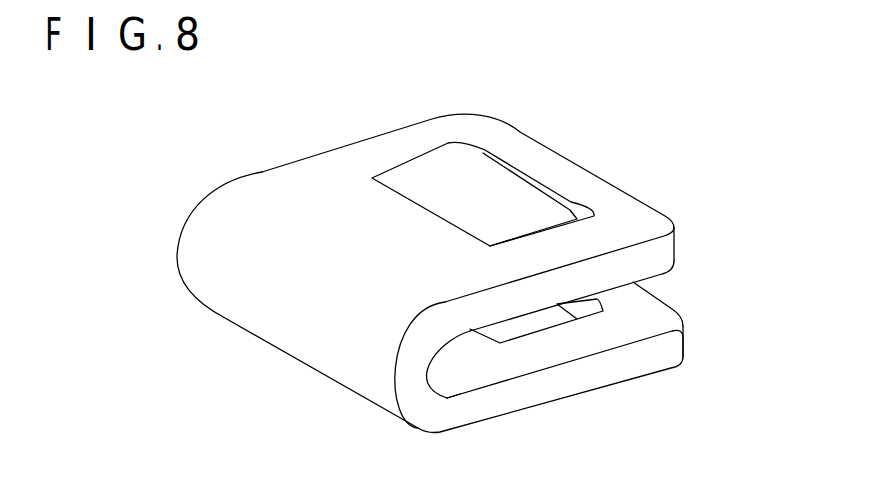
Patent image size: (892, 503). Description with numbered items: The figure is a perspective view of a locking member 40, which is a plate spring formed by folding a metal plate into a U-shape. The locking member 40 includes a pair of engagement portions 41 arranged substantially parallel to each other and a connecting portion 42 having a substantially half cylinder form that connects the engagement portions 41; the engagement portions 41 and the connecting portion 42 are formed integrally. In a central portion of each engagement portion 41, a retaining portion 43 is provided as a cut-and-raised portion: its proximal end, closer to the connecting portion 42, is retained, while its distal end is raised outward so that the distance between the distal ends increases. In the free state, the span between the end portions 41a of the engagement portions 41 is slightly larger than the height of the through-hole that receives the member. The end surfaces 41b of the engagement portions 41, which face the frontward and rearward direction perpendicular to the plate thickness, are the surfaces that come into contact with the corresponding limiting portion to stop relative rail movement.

The locking member 40 is at (590, 69).
The engagement portion 41 is at (421, 131).
The end portion 41a is at (678, 252).
The end surface 41b is at (626, 258).
The connecting portion 42 is at (260, 330).
The retaining portion 43 is at (484, 168).